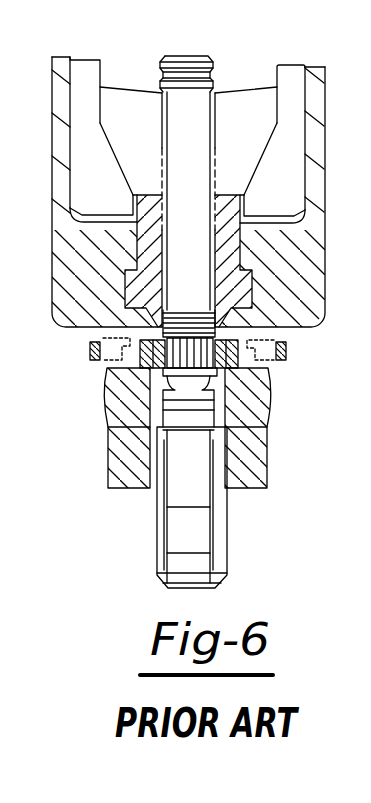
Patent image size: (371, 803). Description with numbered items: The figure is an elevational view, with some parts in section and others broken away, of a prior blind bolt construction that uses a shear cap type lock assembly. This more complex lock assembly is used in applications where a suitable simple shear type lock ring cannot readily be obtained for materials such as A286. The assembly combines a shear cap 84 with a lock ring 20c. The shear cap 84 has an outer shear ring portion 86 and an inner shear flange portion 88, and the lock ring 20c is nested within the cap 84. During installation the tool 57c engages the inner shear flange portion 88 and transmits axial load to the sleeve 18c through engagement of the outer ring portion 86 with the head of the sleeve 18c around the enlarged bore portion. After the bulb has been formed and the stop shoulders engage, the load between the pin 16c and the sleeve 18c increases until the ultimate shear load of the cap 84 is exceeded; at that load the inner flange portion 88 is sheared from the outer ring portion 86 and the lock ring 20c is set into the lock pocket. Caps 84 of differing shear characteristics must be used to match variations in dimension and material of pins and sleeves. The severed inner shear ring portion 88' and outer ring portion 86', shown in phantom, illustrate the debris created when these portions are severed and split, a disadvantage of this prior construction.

The tool 57c is at (325, 250).
The shear cap 84 is at (238, 343).
The outer shear ring portion 86 is at (279, 375).
The inner shear flange portion 88 is at (289, 315).
The outer ring portion 86' is at (63, 368).
The inner shear ring portion 88' is at (69, 343).
The lock ring 20c is at (152, 375).
The sleeve 18c is at (222, 536).
The pin 16c is at (205, 547).